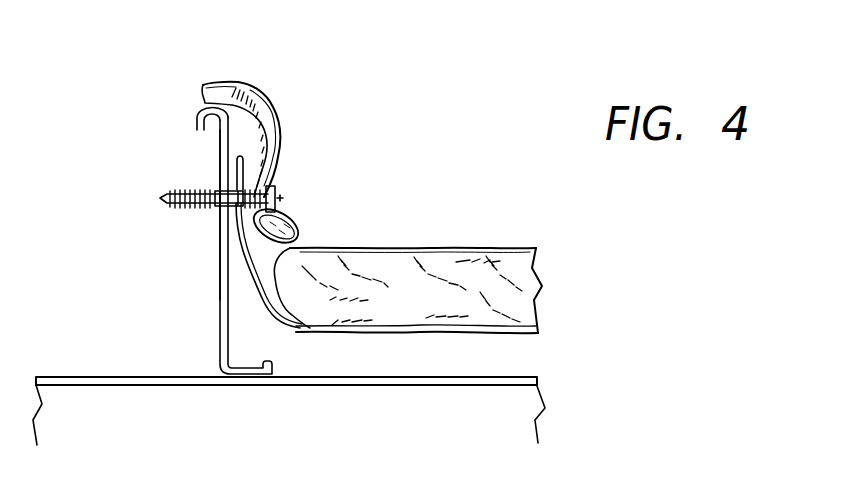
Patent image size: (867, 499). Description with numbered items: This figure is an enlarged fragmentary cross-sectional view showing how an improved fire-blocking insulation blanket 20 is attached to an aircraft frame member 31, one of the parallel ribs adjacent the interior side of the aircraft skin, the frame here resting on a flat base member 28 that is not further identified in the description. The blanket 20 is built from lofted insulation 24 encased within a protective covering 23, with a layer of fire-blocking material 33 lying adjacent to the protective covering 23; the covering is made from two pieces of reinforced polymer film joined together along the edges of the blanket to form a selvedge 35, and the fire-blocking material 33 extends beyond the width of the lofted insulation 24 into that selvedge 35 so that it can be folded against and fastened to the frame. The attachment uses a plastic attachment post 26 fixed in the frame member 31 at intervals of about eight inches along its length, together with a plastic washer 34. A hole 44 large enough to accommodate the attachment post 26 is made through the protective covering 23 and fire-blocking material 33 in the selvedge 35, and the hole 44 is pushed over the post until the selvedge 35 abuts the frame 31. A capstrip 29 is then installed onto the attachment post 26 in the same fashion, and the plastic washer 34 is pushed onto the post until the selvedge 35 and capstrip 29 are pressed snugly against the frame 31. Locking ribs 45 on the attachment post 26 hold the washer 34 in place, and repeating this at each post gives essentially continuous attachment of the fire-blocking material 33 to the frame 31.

The fire-blocking blanket 20 is at (280, 323).
The protective covering 23 is at (394, 248).
The lofted insulation 24 is at (520, 277).
The attachment post 26 is at (170, 199).
The base plate 28 is at (80, 377).
The capstrip 29 is at (233, 81).
The frame member 31 is at (219, 305).
The fire-blocking material 33 is at (538, 333).
The plastic washer 34 is at (278, 179).
The selvedge 35 is at (291, 216).
The hole 44 is at (223, 212).
The locking ribs 45 is at (205, 189).